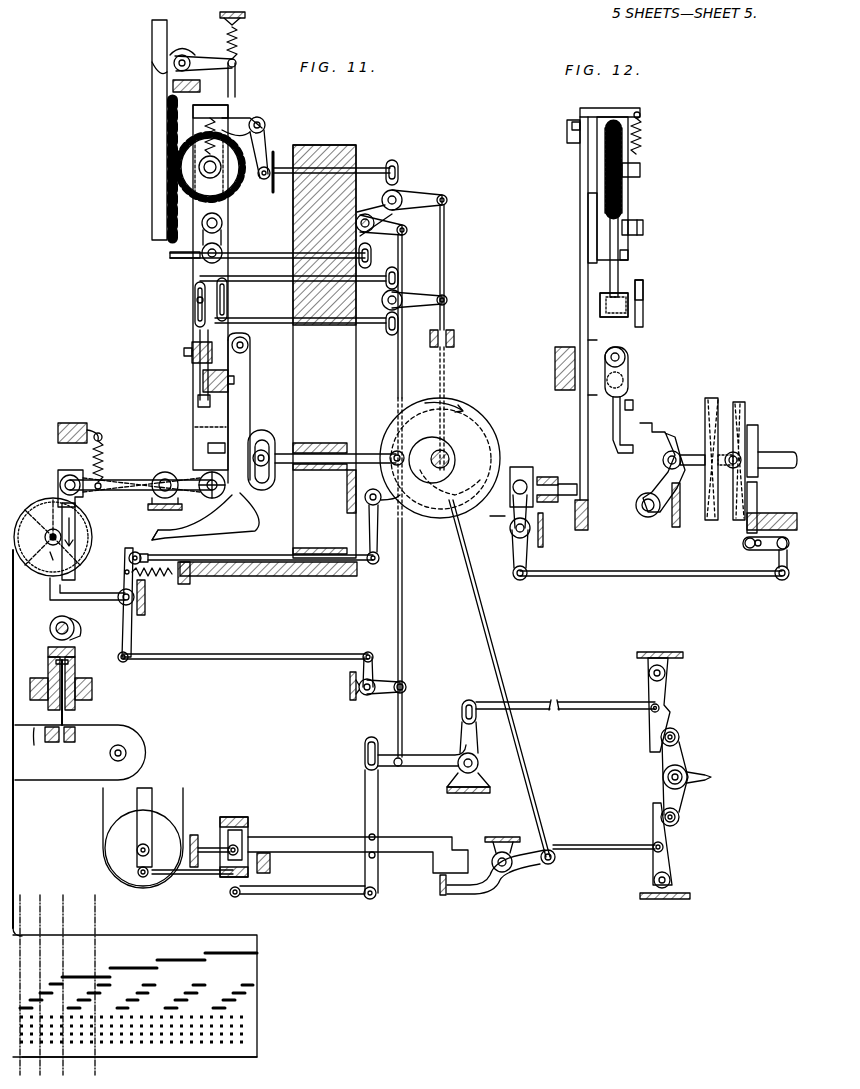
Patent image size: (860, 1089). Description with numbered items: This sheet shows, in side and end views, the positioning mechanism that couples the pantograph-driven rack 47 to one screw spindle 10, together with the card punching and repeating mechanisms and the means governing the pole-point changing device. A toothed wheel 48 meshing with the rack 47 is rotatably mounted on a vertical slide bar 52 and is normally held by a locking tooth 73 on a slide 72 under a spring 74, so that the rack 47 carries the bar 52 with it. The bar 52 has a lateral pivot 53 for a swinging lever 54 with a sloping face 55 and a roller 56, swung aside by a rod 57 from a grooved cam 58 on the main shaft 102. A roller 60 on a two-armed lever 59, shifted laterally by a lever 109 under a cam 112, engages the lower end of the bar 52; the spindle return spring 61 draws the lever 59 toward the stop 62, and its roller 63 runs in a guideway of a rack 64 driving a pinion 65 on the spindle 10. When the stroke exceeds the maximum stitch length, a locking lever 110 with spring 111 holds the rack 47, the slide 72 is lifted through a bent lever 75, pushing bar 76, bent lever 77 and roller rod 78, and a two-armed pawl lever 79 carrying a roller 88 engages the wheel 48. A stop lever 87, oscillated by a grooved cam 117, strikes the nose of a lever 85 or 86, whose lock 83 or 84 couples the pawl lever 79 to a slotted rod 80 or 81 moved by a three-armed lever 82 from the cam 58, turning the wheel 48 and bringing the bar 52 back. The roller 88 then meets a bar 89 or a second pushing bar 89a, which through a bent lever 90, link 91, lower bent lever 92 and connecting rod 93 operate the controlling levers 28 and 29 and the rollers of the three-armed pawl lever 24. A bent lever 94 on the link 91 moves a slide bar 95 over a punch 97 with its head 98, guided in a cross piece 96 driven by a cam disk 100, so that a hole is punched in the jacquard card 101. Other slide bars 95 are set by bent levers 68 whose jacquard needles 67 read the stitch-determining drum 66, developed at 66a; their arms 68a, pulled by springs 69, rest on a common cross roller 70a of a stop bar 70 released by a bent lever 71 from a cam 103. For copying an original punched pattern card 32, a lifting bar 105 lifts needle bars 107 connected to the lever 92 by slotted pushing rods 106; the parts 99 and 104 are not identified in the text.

In FIG. 11, the screw spindle 10 is at (45, 530).
In FIG. 11, the three-armed pawl lever 24 is at (665, 763).
In FIG. 11, the controlling lever 28 is at (652, 735).
In FIG. 11, the controlling lever 29 is at (660, 856).
In FIG. 11, the punched pattern card 32 is at (103, 822).
In FIG. 11, the rack 47 is at (152, 96).
In FIG. 11, the toothed wheel 48 is at (176, 154).
In FIG. 12, the toothed wheel 48 is at (605, 176).
In FIG. 11, the slide bar 52 is at (193, 272).
In FIG. 12, the slide bar 52 is at (585, 212).
In FIG. 11, the lateral pivot 53 is at (249, 346).
In FIG. 11, the swinging lever 54 is at (222, 520).
In FIG. 12, the swinging lever 54 is at (581, 530).
In FIG. 11, the sloping face 55 is at (158, 534).
In FIG. 11, the roller 56 is at (263, 440).
In FIG. 11, the rod 57 is at (316, 454).
In FIG. 11, the grooved cam 58 is at (395, 435).
In FIG. 12, the two-armed lever 59 is at (557, 478).
In FIG. 11, the roller 60 is at (228, 492).
In FIG. 12, the roller 60 is at (582, 480).
In FIG. 11, the spindle return spring 61 is at (92, 460).
In FIG. 11, the stop 62 is at (78, 425).
In FIG. 11, the roller 63 is at (62, 482).
In FIG. 11, the rack 64 is at (78, 540).
In FIG. 11, the pinion 65 is at (50, 552).
In FIG. 11, the stitch-determining drum 66 is at (58, 500).
In FIG. 11, the development of the drum 66a is at (190, 938).
In FIG. 11, the jacquard needle 67 is at (50, 600).
In FIG. 11, the bent lever 68 is at (122, 612).
In FIG. 11, the upwardly projecting arm 68a is at (124, 574).
In FIG. 11, the spring 69 is at (160, 578).
In FIG. 11, the stop bar 70 is at (272, 576).
In FIG. 11, the common cross roller 70a is at (142, 549).
In FIG. 11, the bent lever 71 is at (380, 552).
In FIG. 11, the slide 72 is at (222, 112).
In FIG. 12, the slide 72 is at (593, 242).
In FIG. 12, the locking tooth 73 is at (608, 125).
In FIG. 11, the spring 74 is at (262, 125).
In FIG. 12, the spring 74 is at (642, 140).
In FIG. 11, the bent lever 75 is at (276, 148).
In FIG. 12, the bent lever 75 is at (572, 142).
In FIG. 11, the pushing bar 76 is at (366, 168).
In FIG. 11, the bent lever 77 is at (400, 190).
In FIG. 11, the roller rod 78 is at (445, 285).
In FIG. 11, the two-armed pawl lever 79 is at (222, 248).
In FIG. 12, the two-armed pawl lever 79 is at (630, 268).
In FIG. 11, the slotted rod 80 is at (262, 282).
In FIG. 12, the slotted rod 80 is at (643, 297).
In FIG. 11, the slotted rod 81 is at (272, 318).
In FIG. 12, the slotted rod 81 is at (639, 290).
In FIG. 11, the three-armed lever 82 is at (420, 305).
In FIG. 11, the lock 83 is at (195, 306).
In FIG. 12, the lock 83 is at (628, 310).
In FIG. 11, the lock 84 is at (228, 303).
In FIG. 12, the lock 84 is at (614, 305).
In FIG. 11, the lever 85 is at (200, 383).
In FIG. 12, the lever 85 is at (622, 348).
In FIG. 12, the lever 86 is at (622, 425).
In FIG. 12, the stop lever 87 is at (668, 436).
In FIG. 11, the roller 88 is at (202, 218).
In FIG. 12, the roller 88 is at (636, 222).
In FIG. 11, the bar 89 is at (270, 252).
In FIG. 11, the second pushing bar 89a is at (195, 245).
In FIG. 11, the bent lever 90 is at (370, 243).
In FIG. 11, the link 91 is at (402, 637).
In FIG. 11, the lower bent lever 92 is at (420, 757).
In FIG. 11, the connecting rod 93 is at (553, 702).
In FIG. 11, the bent lever 94 is at (388, 680).
In FIG. 11, the slide bar 95 is at (236, 660).
In FIG. 11, the cross piece 96 is at (76, 672).
In FIG. 11, the punch 97 is at (65, 718).
In FIG. 11, the head 98 is at (56, 661).
In FIG. 11, the bearing 99 is at (35, 700).
In FIG. 11, the cam disk 100 is at (78, 634).
In FIG. 11, the jacquard card 101 is at (38, 778).
In FIG. 11, the main shaft 102 is at (448, 452).
In FIG. 12, the main shaft 102 is at (775, 468).
In FIG. 11, the cam 103 is at (420, 495).
In FIG. 11, the lever 104 is at (490, 884).
In FIG. 11, the lifting bar 105 is at (440, 886).
In FIG. 11, the pushing rod 106 is at (378, 805).
In FIG. 11, the needle bar 107 is at (304, 840).
In FIG. 11, the lever 109 is at (490, 515).
In FIG. 11, the locking lever 110 is at (184, 56).
In FIG. 11, the spring 111 is at (236, 45).
In FIG. 12, the cam 112 is at (758, 436).
In FIG. 12, the grooved cam 117 is at (712, 404).